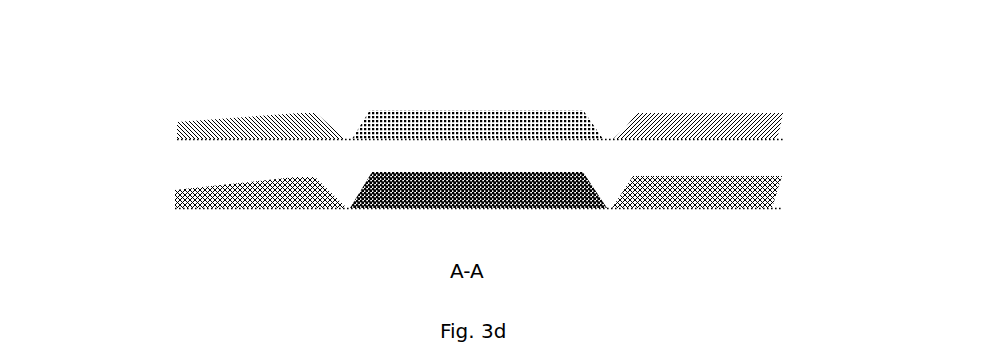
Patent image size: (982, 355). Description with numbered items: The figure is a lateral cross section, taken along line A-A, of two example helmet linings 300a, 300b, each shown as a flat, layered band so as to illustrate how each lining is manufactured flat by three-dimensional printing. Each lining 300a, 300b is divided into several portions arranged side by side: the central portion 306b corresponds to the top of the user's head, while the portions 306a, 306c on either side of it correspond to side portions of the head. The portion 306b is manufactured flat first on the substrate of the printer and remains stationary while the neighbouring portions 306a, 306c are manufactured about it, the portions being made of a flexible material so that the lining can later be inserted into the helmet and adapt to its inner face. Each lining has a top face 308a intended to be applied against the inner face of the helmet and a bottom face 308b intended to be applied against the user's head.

The helmet lining 300a is at (461, 114).
The helmet lining 300b is at (92, 202).
The portion 306a is at (762, 118).
The portion 306b is at (512, 113).
The portion 306c is at (247, 120).
The top face 308a is at (760, 140).
The bottom face 308b is at (708, 118).